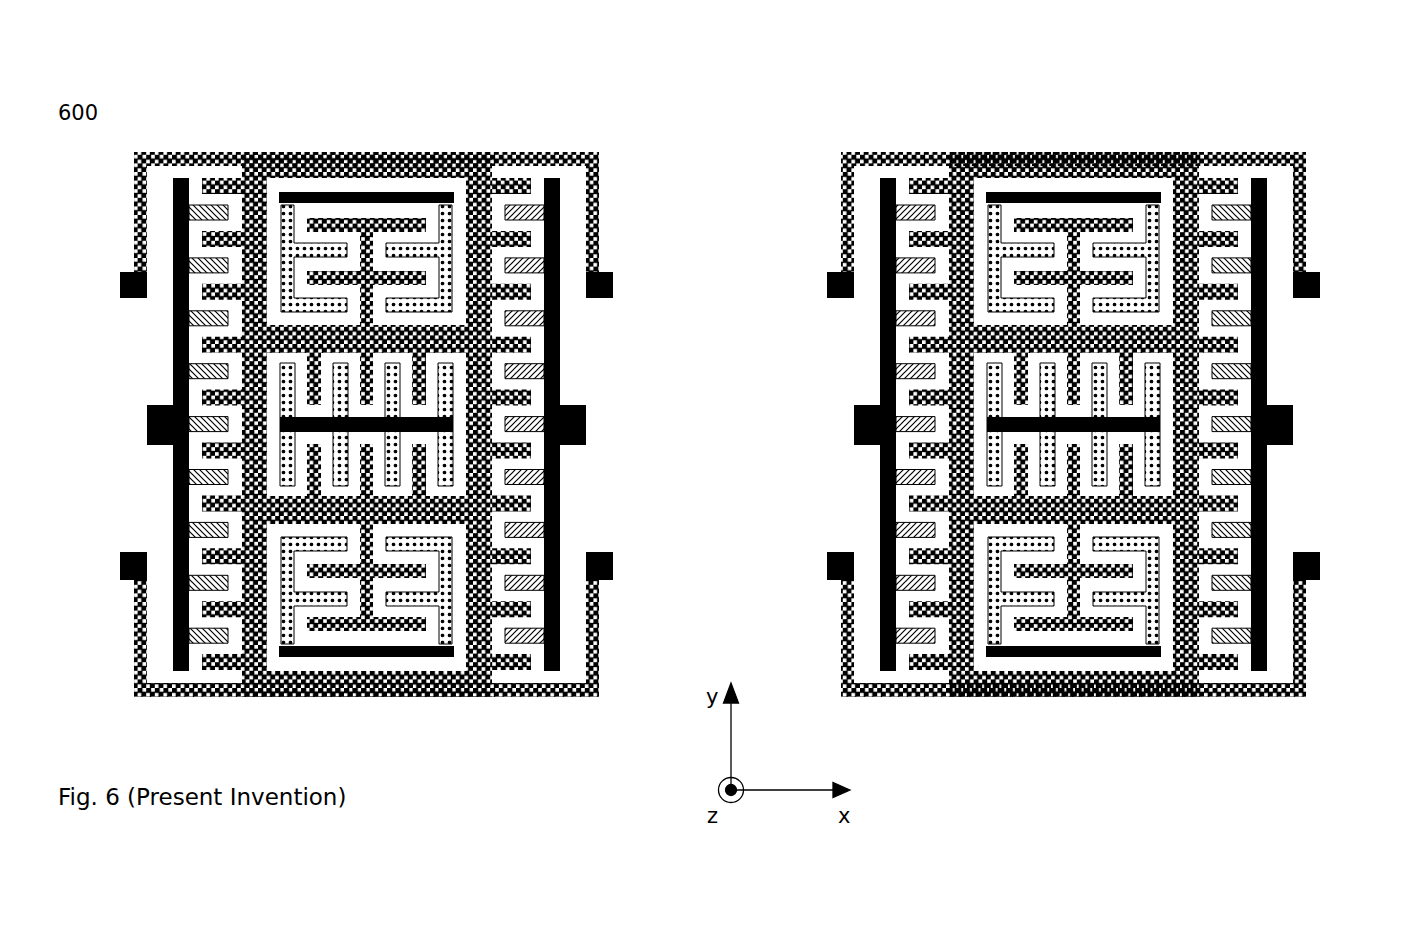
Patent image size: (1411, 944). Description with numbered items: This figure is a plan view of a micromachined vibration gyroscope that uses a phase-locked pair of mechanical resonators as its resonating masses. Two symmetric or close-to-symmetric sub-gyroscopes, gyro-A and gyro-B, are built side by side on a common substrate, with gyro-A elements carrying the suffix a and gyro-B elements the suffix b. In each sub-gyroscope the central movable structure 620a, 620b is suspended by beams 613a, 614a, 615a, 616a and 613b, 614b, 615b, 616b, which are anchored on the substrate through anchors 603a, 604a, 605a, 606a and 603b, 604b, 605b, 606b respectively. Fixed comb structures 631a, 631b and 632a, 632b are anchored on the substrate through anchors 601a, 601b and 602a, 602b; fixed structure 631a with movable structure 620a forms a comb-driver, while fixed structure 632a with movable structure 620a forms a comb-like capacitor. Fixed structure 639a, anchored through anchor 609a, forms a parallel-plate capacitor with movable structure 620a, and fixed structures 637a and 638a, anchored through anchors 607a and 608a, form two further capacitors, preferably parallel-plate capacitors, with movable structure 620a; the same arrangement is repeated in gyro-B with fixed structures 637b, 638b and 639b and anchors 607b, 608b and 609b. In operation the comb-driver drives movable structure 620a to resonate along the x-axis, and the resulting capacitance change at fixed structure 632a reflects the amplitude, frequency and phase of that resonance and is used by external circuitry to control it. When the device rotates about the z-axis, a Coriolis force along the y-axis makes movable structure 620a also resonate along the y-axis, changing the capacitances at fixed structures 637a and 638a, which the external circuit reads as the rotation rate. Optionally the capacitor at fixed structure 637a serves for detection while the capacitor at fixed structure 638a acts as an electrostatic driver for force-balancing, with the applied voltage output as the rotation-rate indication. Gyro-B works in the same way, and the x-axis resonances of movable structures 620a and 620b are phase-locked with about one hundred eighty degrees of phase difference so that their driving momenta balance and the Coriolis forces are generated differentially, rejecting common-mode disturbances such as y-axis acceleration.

The anchor 601a is at (148, 418).
The anchor 601b is at (1292, 418).
The anchor 602a is at (588, 422).
The anchor 602b is at (852, 422).
The anchor 603a is at (123, 565).
The anchor 603b is at (1317, 565).
The anchor 604a is at (612, 567).
The anchor 604b is at (828, 567).
The anchor 605a is at (610, 287).
The anchor 605b is at (830, 287).
The anchor 606a is at (122, 287).
The anchor 606b is at (1318, 287).
The anchor 607a is at (308, 660).
The anchor 607b is at (1132, 660).
The anchor 608a is at (307, 192).
The anchor 608b is at (1133, 192).
The anchor 609a is at (317, 420).
The anchor 609b is at (1123, 420).
The beam 613a is at (137, 633).
The beam 613b is at (1303, 633).
The beam 614a is at (597, 630).
The beam 614b is at (843, 630).
The beam 615a is at (597, 205).
The beam 615b is at (843, 205).
The beam 616a is at (135, 208).
The beam 616b is at (1305, 208).
The movable structure 620a is at (560, 457).
The movable structure 620b is at (880, 457).
The fixed structure 631a is at (203, 272).
The fixed structure 631b is at (1237, 272).
The fixed structure 632a is at (533, 270).
The fixed structure 632b is at (907, 270).
The fixed structure 637a is at (373, 657).
The fixed structure 637b is at (1067, 657).
The fixed structure 638a is at (320, 247).
The fixed structure 638b is at (1120, 247).
The fixed structure 639a is at (295, 377).
The fixed structure 639b is at (1145, 377).